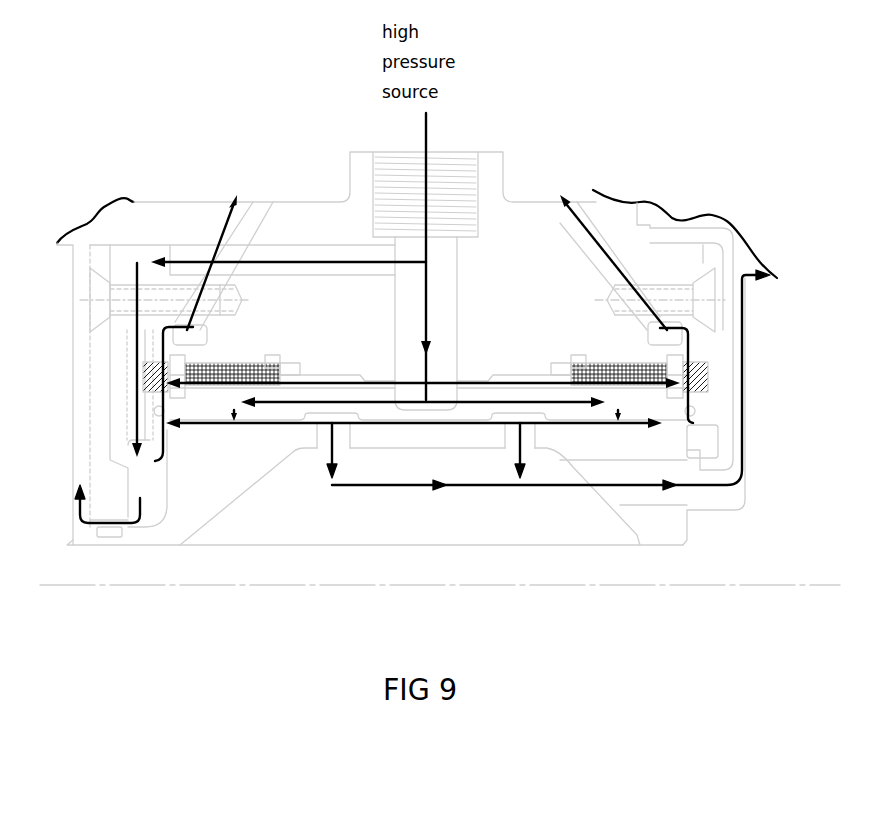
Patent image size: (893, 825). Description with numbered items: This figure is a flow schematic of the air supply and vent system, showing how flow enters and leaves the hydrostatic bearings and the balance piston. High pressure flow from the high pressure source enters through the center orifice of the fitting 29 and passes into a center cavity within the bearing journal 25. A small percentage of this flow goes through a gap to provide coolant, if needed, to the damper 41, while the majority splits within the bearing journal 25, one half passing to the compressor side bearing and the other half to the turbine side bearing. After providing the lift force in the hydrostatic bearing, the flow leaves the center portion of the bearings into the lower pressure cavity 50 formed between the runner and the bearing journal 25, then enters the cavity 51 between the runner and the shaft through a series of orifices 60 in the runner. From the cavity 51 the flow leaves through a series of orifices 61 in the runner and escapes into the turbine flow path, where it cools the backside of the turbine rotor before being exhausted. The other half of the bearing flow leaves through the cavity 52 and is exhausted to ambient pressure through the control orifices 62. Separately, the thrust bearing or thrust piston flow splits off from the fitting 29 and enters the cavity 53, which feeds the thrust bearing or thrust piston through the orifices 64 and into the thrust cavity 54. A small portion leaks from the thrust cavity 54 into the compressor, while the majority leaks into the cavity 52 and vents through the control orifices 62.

The bearing journal 25 is at (550, 403).
The fitting 29 is at (455, 148).
The damper 41 is at (237, 373).
The lower pressure cavity 50 is at (505, 418).
The cavity 51 is at (362, 518).
The cavity 52 is at (158, 415).
The cavity 53 is at (125, 258).
The thrust cavity 54 is at (137, 483).
The orifices 60 is at (325, 443).
The orifices 61 is at (647, 478).
The control orifices 62 is at (227, 227).
The orifices 64 is at (90, 348).